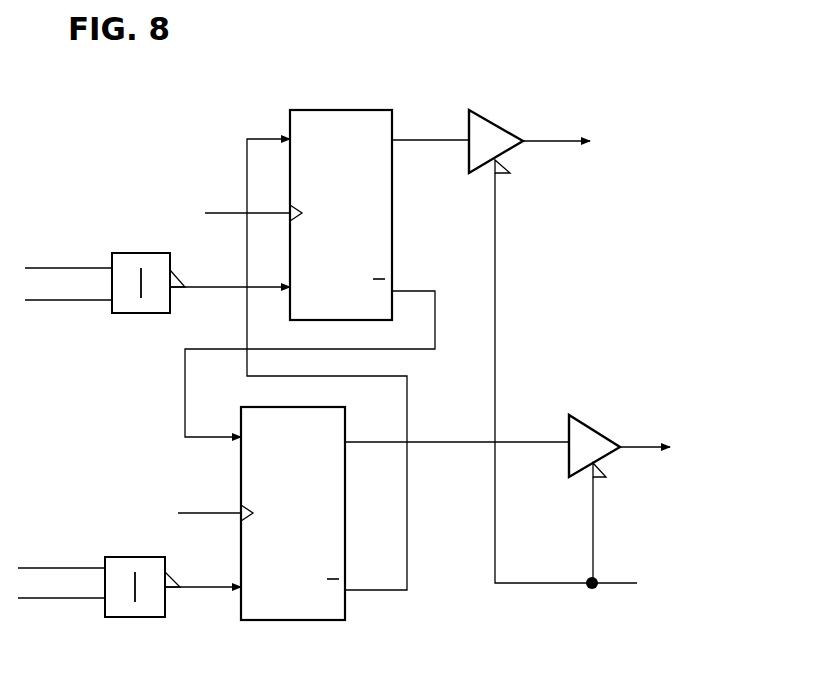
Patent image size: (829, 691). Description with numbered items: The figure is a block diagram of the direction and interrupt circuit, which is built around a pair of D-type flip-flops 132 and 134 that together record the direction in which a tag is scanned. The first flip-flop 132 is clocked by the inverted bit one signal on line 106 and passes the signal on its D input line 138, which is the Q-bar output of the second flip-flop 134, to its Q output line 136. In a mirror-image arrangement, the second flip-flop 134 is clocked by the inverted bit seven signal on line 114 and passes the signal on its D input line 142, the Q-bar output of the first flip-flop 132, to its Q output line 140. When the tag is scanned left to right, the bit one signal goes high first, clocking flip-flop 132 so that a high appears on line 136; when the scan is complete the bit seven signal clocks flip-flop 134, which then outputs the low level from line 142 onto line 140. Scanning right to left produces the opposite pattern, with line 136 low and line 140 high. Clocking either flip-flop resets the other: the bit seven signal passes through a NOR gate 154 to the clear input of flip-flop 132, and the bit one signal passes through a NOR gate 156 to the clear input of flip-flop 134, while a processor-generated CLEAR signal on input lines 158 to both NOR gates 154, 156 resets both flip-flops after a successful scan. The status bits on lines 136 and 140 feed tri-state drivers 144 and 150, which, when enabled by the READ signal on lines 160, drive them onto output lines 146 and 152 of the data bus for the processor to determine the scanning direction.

The line carrying the inverted bit one signal 106 is at (211, 212).
The line carrying the inverted bit seven signal 114 is at (27, 267).
The 7474 D-type flip-flop 132 is at (290, 111).
The 7474 D-type flip-flop 134 is at (325, 621).
The Q output line 136 is at (416, 138).
The D input line 138 is at (247, 146).
The Q output line 140 is at (462, 440).
The D input line 142 is at (425, 290).
The tri-state driver 144 is at (497, 127).
The output line 146 is at (548, 143).
The tri-state driver 150 is at (585, 432).
The output line 152 is at (640, 449).
The NOR gate 154 is at (153, 313).
The NOR gate 156 is at (140, 617).
The input lines 158 is at (66, 301).
The lines carrying the READ signal 160 is at (495, 347).